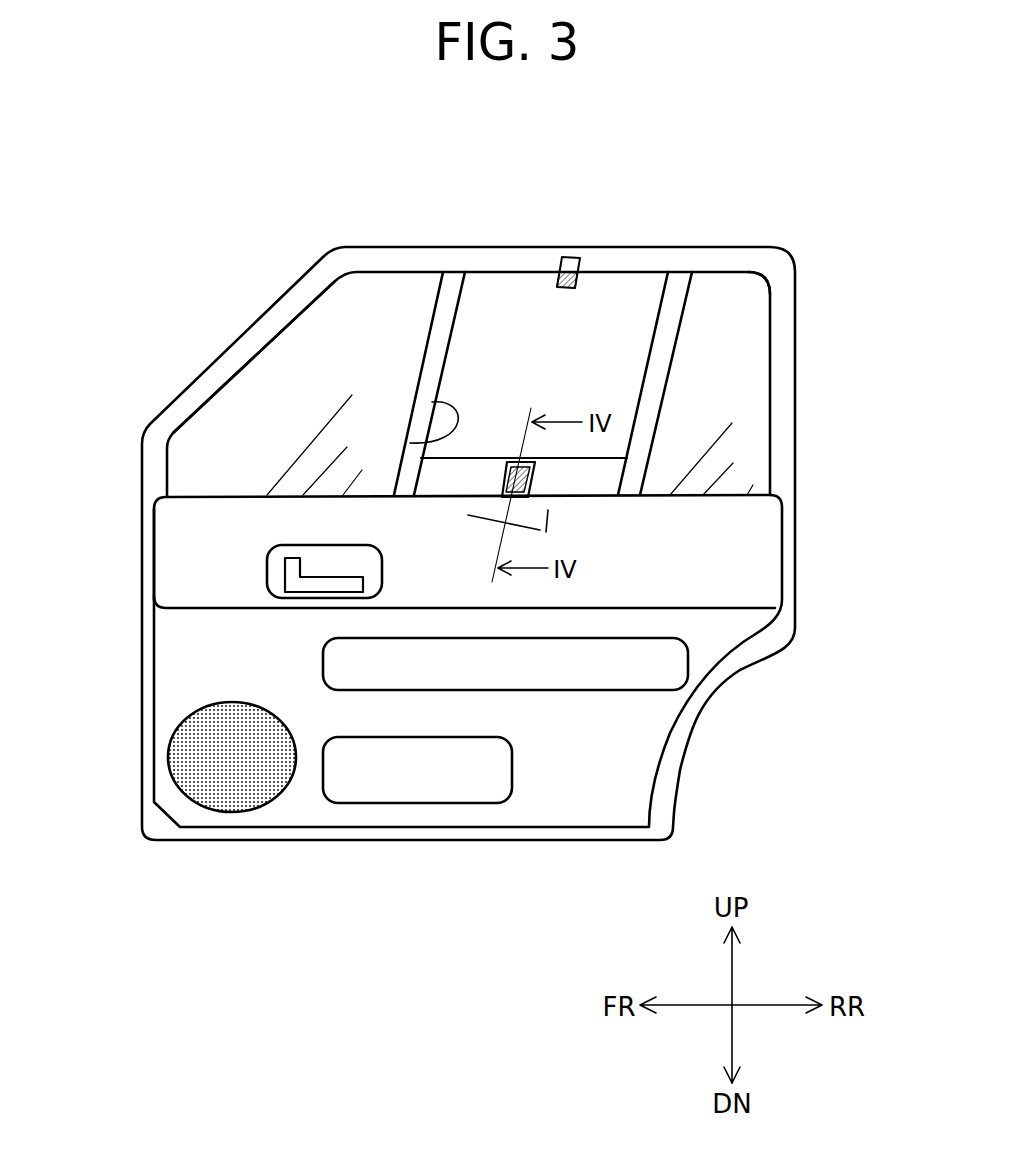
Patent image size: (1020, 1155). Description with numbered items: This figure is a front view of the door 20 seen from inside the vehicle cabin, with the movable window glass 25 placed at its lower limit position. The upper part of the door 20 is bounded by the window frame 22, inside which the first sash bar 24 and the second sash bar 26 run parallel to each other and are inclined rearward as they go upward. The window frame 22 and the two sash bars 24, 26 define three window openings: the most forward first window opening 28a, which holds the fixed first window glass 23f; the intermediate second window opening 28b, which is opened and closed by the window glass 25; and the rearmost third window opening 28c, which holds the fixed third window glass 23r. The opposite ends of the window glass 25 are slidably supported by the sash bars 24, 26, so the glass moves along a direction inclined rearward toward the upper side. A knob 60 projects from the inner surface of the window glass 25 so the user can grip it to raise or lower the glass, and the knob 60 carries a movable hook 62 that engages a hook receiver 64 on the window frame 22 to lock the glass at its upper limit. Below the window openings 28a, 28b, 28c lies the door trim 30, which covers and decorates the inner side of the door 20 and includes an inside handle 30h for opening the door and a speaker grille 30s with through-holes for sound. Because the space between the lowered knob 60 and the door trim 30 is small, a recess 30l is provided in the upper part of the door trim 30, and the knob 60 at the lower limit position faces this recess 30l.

The door 20 is at (850, 270).
The window frame 22 is at (302, 285).
The first window glass 23f is at (347, 297).
The third window glass 23r is at (720, 297).
The first sash bar 24 is at (430, 364).
The second window glass 25 is at (603, 477).
The second sash bar 26 is at (658, 368).
The first window opening 28a is at (217, 497).
The second window opening 28b is at (423, 440).
The third window opening 28c is at (768, 320).
The door trim 30 is at (165, 580).
The inside handle 30h is at (287, 575).
The recess 30l is at (548, 530).
The speaker grille 30s is at (232, 798).
The knob 60 is at (503, 490).
The hook 62 is at (522, 462).
The hook receiver 64 is at (568, 258).